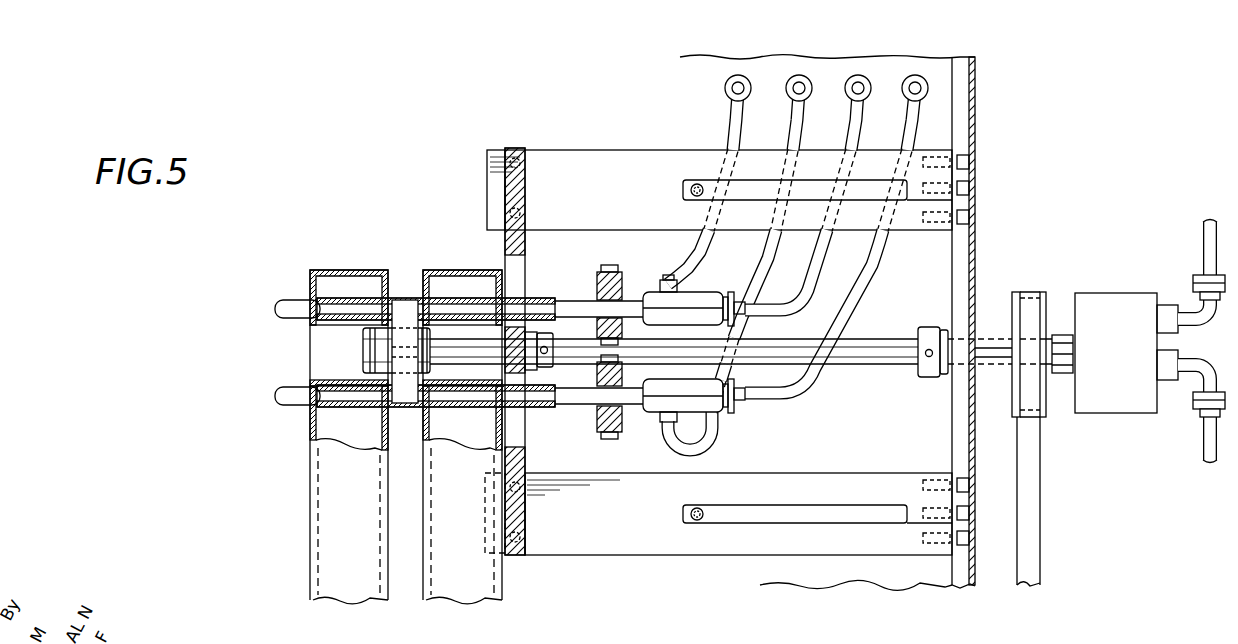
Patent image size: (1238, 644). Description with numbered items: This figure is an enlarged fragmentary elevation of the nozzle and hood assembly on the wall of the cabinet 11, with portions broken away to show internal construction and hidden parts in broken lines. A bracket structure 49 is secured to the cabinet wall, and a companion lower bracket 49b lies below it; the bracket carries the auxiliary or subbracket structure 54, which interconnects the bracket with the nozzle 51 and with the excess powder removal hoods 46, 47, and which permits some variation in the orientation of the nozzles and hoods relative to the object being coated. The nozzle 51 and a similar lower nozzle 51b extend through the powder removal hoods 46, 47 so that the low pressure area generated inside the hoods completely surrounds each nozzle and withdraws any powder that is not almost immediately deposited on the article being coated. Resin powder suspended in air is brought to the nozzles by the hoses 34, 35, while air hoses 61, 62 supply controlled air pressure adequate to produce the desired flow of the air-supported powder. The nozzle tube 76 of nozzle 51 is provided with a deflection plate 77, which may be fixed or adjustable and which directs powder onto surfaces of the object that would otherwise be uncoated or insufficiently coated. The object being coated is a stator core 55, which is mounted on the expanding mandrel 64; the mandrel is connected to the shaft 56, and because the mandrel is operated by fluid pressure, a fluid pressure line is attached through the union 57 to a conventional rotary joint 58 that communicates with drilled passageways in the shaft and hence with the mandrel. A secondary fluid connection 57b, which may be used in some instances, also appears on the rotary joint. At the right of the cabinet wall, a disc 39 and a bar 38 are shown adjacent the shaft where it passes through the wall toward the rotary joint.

The cabinet 11 is at (978, 222).
The hose 34 is at (853, 118).
The hose 35 is at (910, 118).
The bar 38 is at (1041, 482).
The disc 39 is at (1013, 300).
The powder removal hood structure 46 is at (344, 270).
The powder removal hood structure 47 is at (488, 260).
The bracket structure 49 is at (597, 160).
The lower beam 49b is at (605, 540).
The nozzle 51 is at (646, 290).
The cylinder 51b is at (650, 410).
The auxiliary bracket structure 54 is at (527, 243).
The stator core 55 is at (398, 300).
The shaft 56 is at (886, 350).
The union 57 is at (1203, 305).
The secondary fluid connection 57b is at (1190, 380).
The rotary joint 58 is at (1108, 300).
The air hose 61 is at (728, 118).
The air hose 62 is at (793, 118).
The mandrel 64 is at (376, 344).
The nozzle tube 76 is at (460, 298).
The deflection plate 77 is at (424, 302).